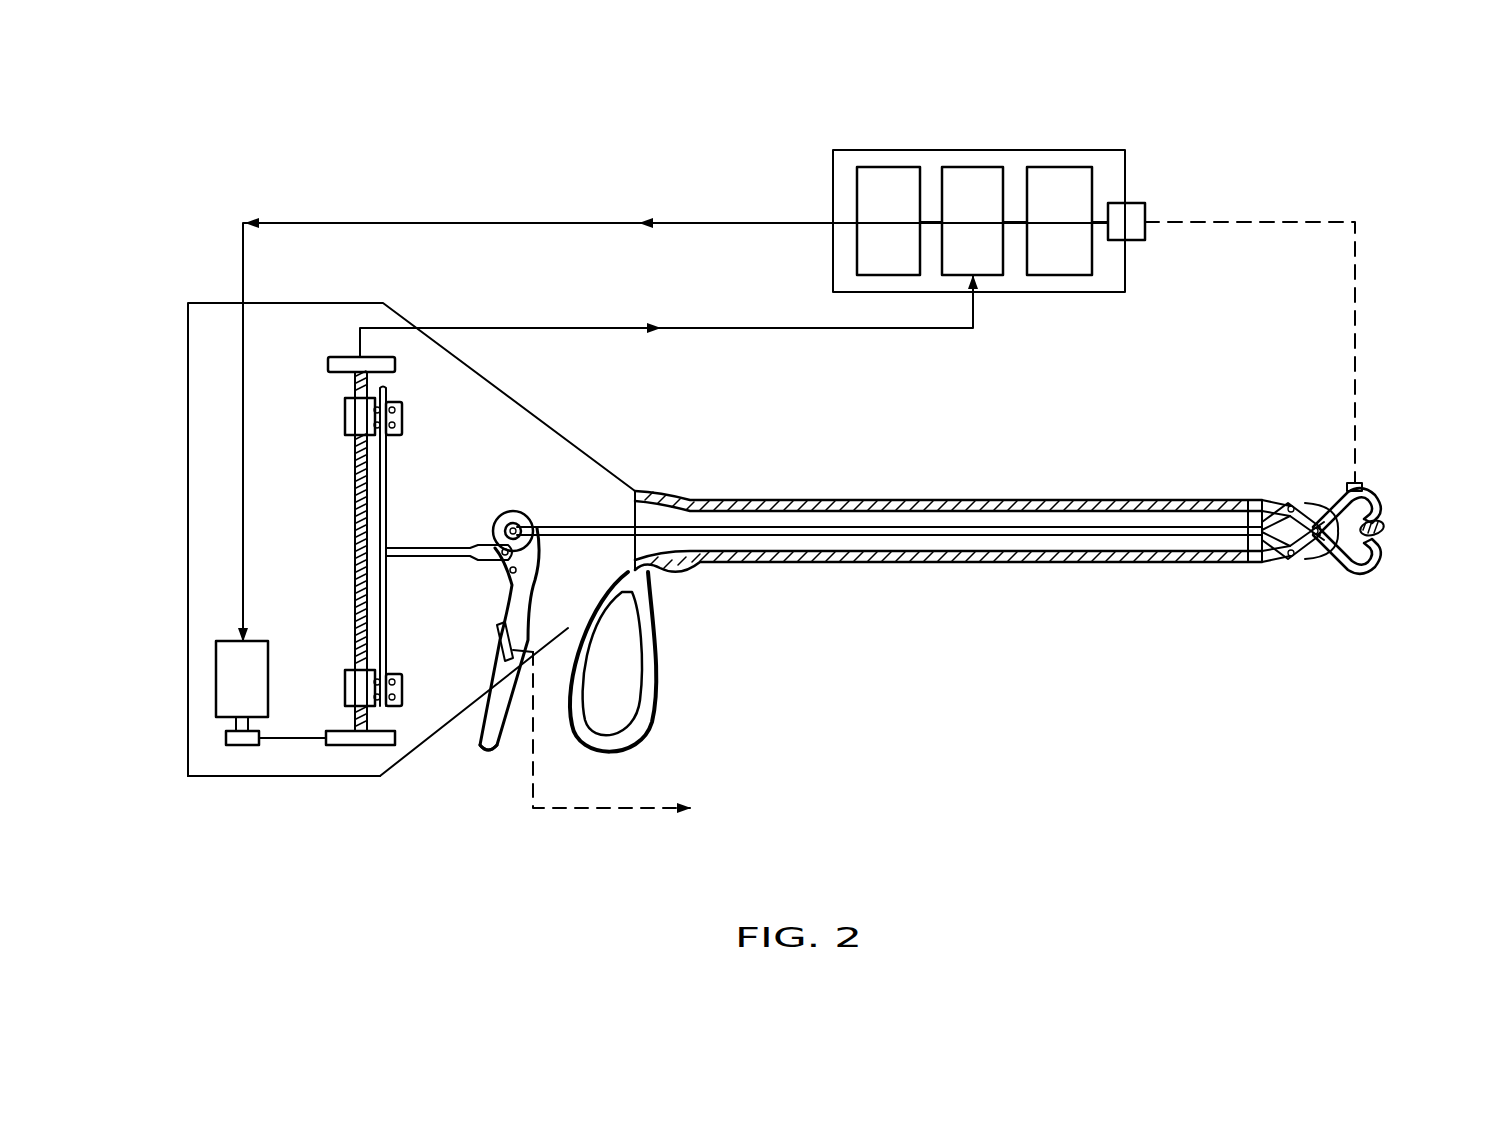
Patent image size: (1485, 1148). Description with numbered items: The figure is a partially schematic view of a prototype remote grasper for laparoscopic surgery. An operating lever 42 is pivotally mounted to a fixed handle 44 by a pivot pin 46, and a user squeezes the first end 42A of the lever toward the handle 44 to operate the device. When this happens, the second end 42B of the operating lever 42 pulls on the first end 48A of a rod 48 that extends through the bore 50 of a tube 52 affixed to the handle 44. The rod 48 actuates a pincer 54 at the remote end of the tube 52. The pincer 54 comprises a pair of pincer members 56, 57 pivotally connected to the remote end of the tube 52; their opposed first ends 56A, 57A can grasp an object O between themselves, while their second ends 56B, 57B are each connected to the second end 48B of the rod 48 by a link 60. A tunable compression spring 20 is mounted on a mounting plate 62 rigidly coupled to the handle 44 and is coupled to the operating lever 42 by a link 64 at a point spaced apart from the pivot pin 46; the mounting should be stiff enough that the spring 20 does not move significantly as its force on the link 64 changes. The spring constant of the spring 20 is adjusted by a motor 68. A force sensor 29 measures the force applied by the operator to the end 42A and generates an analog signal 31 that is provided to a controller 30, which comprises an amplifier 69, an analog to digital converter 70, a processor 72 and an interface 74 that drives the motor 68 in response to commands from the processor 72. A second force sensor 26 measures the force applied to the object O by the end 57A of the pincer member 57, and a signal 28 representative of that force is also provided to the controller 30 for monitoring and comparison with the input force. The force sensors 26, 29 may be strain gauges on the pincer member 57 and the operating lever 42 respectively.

The tunable compression spring 20 is at (492, 416).
The force sensor 26 is at (1360, 484).
The signal 28 is at (1360, 346).
The force sensor 29 is at (498, 650).
The controller 30 is at (935, 225).
The analog signal 31 is at (610, 810).
The operating lever 42 is at (490, 712).
The first end of operating lever 42A is at (489, 748).
The second end of operating lever 42B is at (500, 515).
The fixed handle 44 is at (630, 728).
The pivot pin 46 is at (505, 575).
The rod 48 is at (783, 525).
The first end of rod 48A is at (525, 512).
The second end of rod 48B is at (1262, 533).
The bore 50 is at (800, 545).
The tube 52 is at (940, 565).
The pincer 54 is at (1309, 565).
The pincer member 56 is at (1365, 562).
The first end of pincer member 56A is at (1385, 540).
The second end of pincer member 56B is at (1290, 503).
The pincer member 57 is at (1372, 500).
The first end of pincer member 57A is at (1385, 518).
The second end of pincer member 57B is at (1298, 556).
The link 60 is at (1312, 470).
The mounting plate 62 is at (220, 318).
The link 64 is at (413, 556).
The motor 68 is at (262, 660).
The amplifier 69 is at (288, 763).
The analog to digital converter 70 is at (1063, 286).
The processor 72 is at (978, 170).
The interface 74 is at (888, 170).
The object O is at (1386, 527).